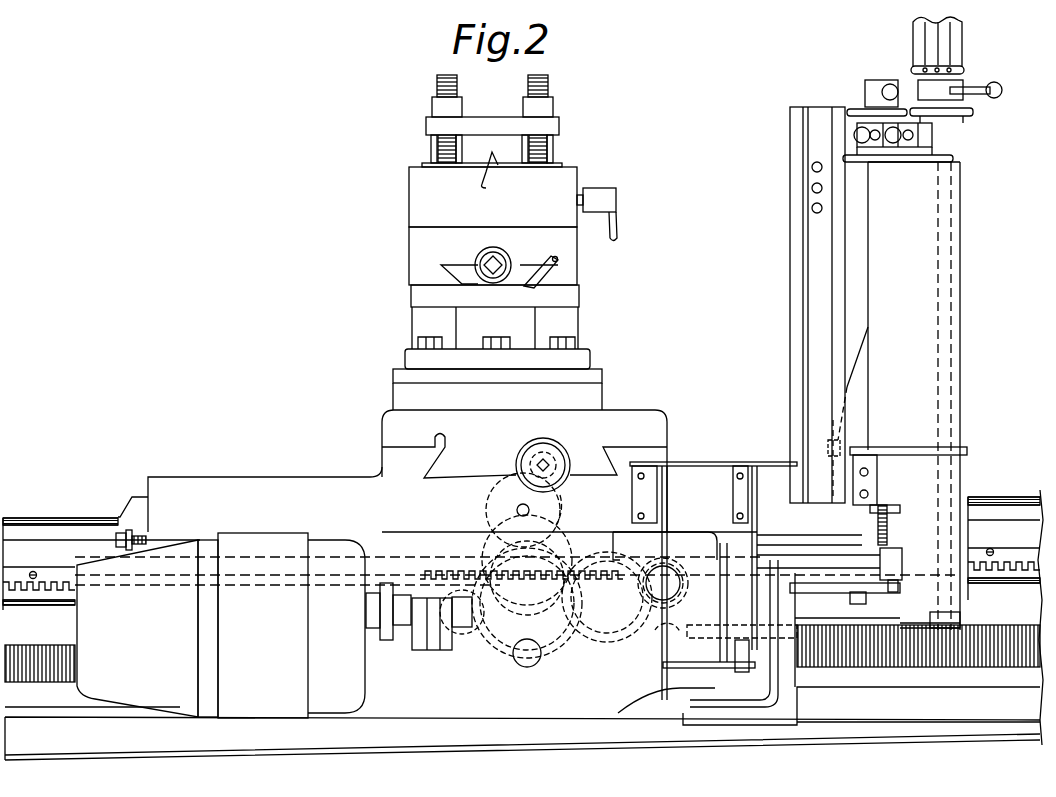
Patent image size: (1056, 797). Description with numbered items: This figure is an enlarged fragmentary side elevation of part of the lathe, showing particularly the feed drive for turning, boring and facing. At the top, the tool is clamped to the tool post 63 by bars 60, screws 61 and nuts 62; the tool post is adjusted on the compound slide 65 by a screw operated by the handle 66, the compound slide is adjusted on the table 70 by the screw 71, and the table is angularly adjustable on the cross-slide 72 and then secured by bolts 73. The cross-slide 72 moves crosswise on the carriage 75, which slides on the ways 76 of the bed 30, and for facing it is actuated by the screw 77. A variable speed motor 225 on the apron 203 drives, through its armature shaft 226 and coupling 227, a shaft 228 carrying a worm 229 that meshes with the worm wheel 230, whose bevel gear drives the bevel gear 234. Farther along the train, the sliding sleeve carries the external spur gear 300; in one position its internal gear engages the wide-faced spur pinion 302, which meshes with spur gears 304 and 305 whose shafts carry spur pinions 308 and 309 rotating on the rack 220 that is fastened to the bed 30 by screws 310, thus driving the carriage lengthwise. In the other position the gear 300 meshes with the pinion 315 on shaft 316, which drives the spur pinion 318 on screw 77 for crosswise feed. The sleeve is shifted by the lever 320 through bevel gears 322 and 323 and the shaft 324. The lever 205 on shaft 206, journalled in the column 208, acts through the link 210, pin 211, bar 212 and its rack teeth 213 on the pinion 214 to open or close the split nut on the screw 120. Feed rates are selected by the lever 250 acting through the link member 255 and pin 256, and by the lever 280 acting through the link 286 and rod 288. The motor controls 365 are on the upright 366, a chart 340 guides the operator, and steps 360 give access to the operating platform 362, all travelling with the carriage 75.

The bed 30 is at (141, 745).
The bars 60 is at (562, 127).
The screws 61 is at (548, 84).
The nuts 62 is at (560, 113).
The tool post 63 is at (411, 192).
The compound slide 65 is at (421, 233).
The handle 66 is at (615, 211).
The table 70 is at (574, 319).
The screw 71 is at (506, 259).
The cross-slide 72 is at (632, 414).
The bolts 73 is at (427, 338).
The carriage 75 is at (311, 478).
The ways 76 is at (73, 517).
The screw 77 is at (553, 456).
The screw 120 is at (928, 668).
The apron 203 is at (802, 716).
The operating lever 205 is at (987, 85).
The shaft 206 is at (984, 542).
The column 208 is at (958, 355).
The link 210 is at (932, 614).
The pin 211 is at (908, 624).
The bar 212 is at (852, 600).
The rack teeth 213 is at (684, 636).
The pinion 214 is at (742, 673).
The rack 220 is at (990, 580).
The variable speed motor 225 is at (517, 625).
The armature shaft 226 is at (395, 645).
The coupling 227 is at (440, 677).
The shaft 228 is at (572, 647).
The worm 229 is at (668, 642).
The worm wheel 230 is at (686, 592).
The bevel gear 234 is at (661, 560).
The lever 250 is at (900, 145).
The link member 255 is at (905, 578).
The pin 256 is at (800, 546).
The lever 280 is at (865, 143).
The link 286 is at (880, 592).
The rod 288 is at (818, 592).
The external spur gear 300 is at (571, 563).
The spur pinion 302 is at (490, 650).
The spur gear 304 is at (612, 525).
The spur gear 305 is at (488, 527).
The spur pinion 308 is at (626, 590).
The spur pinion 309 is at (448, 597).
The screws 310 is at (995, 552).
The pinion 315 is at (566, 511).
The shaft 316 is at (491, 503).
The spur pinion 318 is at (561, 468).
The lever 320 is at (895, 82).
The bevel gear 322 is at (922, 508).
The bevel gear 323 is at (884, 518).
The shaft 324 is at (764, 536).
The chart 340 is at (923, 43).
The steps 360 is at (690, 682).
The operating platform 362 is at (735, 460).
The control button 365 is at (812, 208).
The upright 366 is at (791, 300).